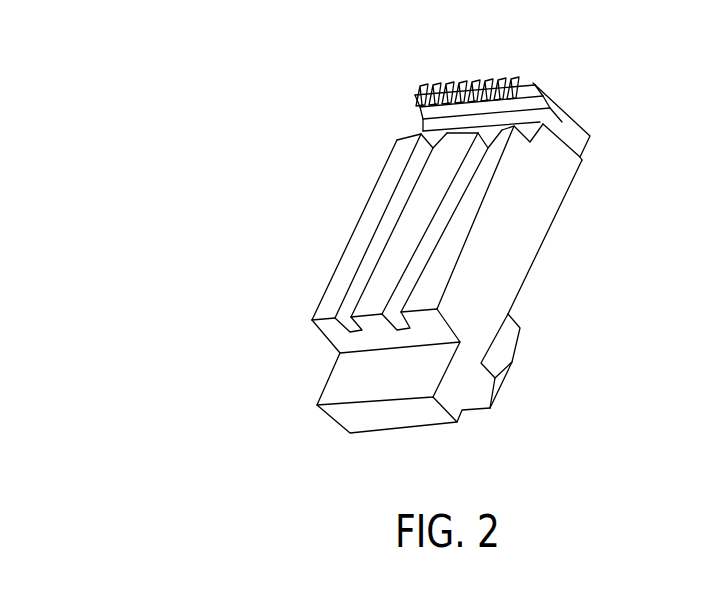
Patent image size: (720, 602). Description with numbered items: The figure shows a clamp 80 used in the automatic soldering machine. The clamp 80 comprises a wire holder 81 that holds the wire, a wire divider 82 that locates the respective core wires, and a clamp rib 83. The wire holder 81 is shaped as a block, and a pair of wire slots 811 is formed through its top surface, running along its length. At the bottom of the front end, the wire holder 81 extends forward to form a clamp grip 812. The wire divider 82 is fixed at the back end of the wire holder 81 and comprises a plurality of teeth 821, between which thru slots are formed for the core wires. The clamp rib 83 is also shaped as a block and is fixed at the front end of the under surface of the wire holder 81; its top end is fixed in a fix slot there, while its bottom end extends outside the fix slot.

The clamp 80 is at (107, 76).
The wire holder 81 is at (500, 265).
The wire slots 811 is at (393, 225).
The clamp grip 812 is at (348, 382).
The wire divider 82 is at (562, 130).
The teeth 821 is at (438, 85).
The clamp rib 83 is at (493, 365).